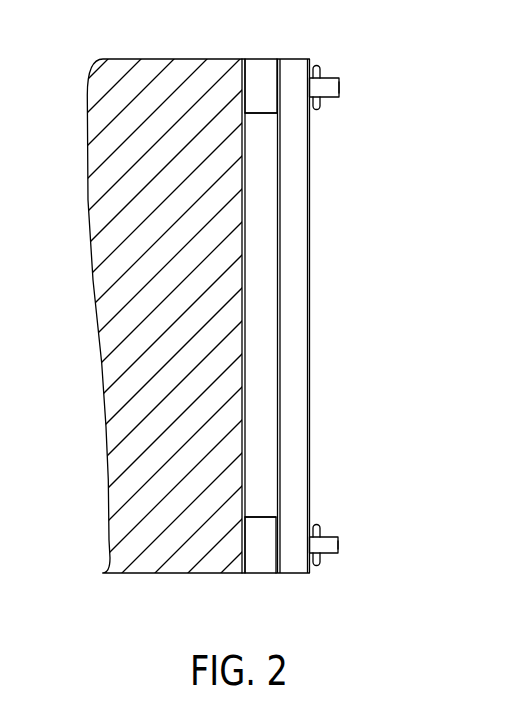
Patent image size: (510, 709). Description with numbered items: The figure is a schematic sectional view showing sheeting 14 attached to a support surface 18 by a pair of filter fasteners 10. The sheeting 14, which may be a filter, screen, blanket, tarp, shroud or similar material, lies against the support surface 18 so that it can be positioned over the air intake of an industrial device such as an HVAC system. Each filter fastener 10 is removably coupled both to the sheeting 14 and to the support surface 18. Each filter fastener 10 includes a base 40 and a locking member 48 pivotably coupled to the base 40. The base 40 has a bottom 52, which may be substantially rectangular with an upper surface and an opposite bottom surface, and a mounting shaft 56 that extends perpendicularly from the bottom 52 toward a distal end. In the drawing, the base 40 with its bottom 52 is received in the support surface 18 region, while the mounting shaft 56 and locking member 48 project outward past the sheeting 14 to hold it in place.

The filter fastener 10 is at (339, 78).
The sheeting 14 is at (303, 300).
The support surface 18 is at (183, 574).
The base 40 is at (257, 68).
The locking member 48 is at (317, 65).
The bottom 52 is at (258, 113).
The mounting shaft 56 is at (332, 88).